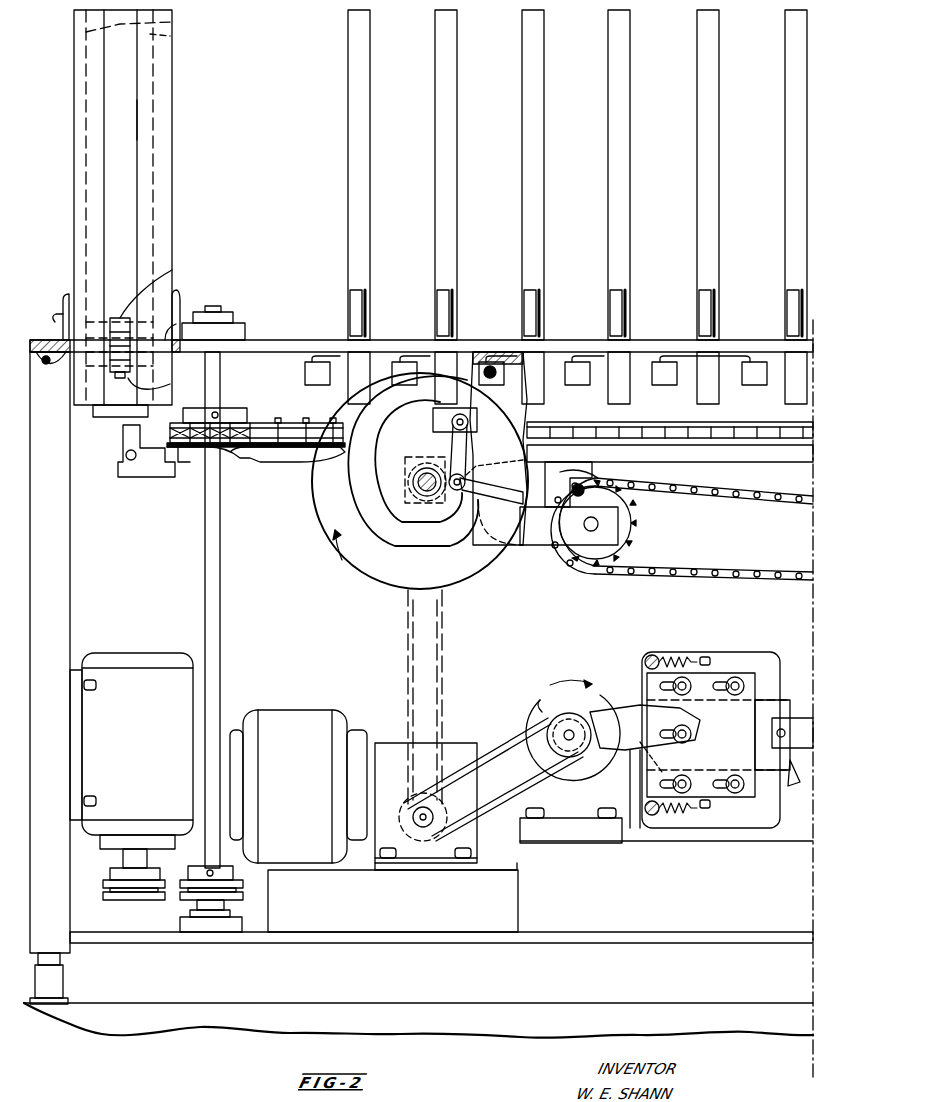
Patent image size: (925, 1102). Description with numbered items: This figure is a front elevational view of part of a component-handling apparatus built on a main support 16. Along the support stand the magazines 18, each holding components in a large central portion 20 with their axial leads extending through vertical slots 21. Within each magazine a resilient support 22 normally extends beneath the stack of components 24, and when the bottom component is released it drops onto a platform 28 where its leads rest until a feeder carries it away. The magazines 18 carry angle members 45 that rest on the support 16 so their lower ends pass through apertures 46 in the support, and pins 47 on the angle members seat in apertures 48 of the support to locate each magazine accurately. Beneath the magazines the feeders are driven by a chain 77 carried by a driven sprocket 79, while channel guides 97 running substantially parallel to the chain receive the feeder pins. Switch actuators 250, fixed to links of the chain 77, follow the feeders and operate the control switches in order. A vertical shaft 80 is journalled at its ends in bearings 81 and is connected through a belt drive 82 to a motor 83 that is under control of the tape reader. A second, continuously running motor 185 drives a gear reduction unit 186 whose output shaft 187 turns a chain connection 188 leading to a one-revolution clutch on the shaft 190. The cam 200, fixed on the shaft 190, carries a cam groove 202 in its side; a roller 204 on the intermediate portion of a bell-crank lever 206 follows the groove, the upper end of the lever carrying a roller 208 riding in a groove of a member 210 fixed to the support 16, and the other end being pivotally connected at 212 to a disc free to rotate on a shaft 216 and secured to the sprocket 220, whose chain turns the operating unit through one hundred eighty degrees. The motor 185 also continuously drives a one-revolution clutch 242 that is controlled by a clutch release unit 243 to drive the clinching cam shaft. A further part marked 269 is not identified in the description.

The main support 16 is at (650, 340).
The magazines 18 is at (162, 84).
The central portions 20 is at (138, 112).
The vertical slots 21 is at (176, 24).
The resilient support 22 is at (140, 354).
The stack of components 24 is at (140, 298).
The platform 28 is at (108, 418).
The angle members 45 is at (66, 296).
The apertures 46 is at (178, 322).
The pins 47 is at (49, 321).
The apertures 48 is at (46, 368).
The chain 77 is at (634, 424).
The driven sprocket 79 is at (252, 440).
The vertical shaft 80 is at (205, 544).
The bearings 81 is at (232, 336).
The belt drive 82 is at (165, 886).
The motor 83 is at (126, 655).
The channel guides 97 is at (778, 452).
The motor 185 is at (300, 722).
The gear reduction unit 186 is at (462, 752).
The output shaft 187 is at (423, 828).
The chain connection 188 is at (444, 672).
The shaft 190 is at (424, 468).
The cam 200 is at (372, 580).
The cam groove 202 is at (362, 470).
The roller 204 is at (486, 457).
The lever 206 is at (510, 496).
The rollers 208 is at (468, 424).
The members 210 is at (500, 360).
The pivotal connection 212 is at (571, 484).
The shaft 216 is at (584, 524).
The sprocket 220 is at (636, 548).
The one-revolution clutch 242 is at (552, 690).
The clutch release unit 243 is at (722, 660).
The switch actuators 250 is at (278, 462).
The slide 269 is at (471, 422).